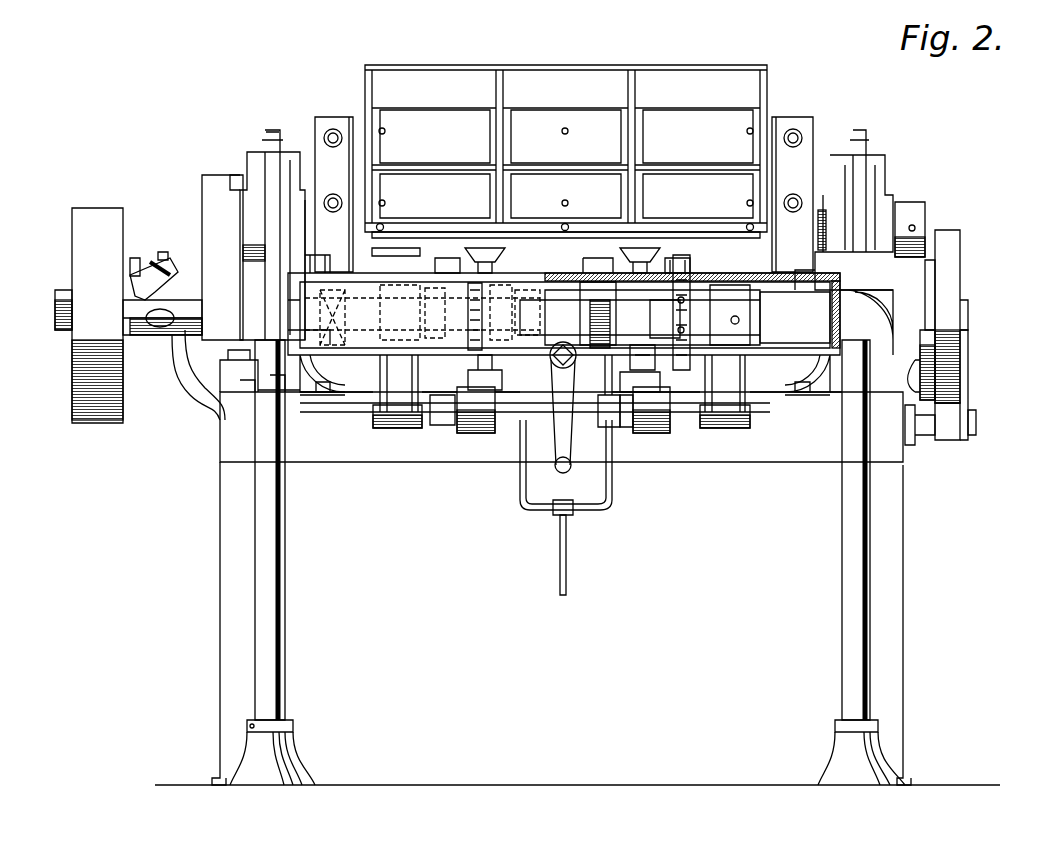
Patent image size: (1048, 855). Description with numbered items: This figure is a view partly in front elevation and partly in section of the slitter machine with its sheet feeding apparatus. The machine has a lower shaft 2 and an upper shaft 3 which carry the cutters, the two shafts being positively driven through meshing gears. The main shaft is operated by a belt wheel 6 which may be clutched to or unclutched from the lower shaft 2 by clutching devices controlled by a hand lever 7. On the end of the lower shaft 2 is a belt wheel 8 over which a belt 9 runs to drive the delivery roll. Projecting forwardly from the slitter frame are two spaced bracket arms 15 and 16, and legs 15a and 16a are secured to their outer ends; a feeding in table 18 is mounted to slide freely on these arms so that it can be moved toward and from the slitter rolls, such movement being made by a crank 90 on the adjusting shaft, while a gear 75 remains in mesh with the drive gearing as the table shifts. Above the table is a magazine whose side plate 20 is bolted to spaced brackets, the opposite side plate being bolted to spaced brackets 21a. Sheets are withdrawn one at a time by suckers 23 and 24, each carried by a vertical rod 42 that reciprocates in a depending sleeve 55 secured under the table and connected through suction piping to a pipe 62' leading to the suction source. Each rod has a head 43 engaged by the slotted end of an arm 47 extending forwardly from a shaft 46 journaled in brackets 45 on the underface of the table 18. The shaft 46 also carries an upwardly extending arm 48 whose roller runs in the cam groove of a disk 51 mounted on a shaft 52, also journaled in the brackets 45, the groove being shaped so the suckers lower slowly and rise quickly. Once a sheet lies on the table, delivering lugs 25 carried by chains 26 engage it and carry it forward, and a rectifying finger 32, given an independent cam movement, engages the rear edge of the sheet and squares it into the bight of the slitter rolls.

The lower shaft 2 is at (965, 321).
The upper shaft 3 is at (925, 222).
The belt wheel 6 is at (128, 315).
The hand lever 7 is at (158, 332).
The belt wheel 8 is at (965, 345).
The belt 9 is at (955, 445).
The bracket arm 15 is at (296, 333).
The leg 15a is at (285, 600).
The bracket arm 16 is at (890, 285).
The leg 16a is at (842, 606).
The feeding in table 18 is at (742, 290).
The side plate 20 is at (566, 151).
The bracket 21a is at (830, 116).
The sucker 23 is at (636, 250).
The sucker 24 is at (484, 250).
The delivering lug 25 is at (680, 258).
The chain 26 is at (692, 290).
The rectifying finger 32 is at (486, 430).
The vertical rod 42 is at (488, 368).
The head 43 is at (400, 407).
The bracket 45 is at (395, 368).
The shaft 46 is at (437, 424).
The arm 47 is at (455, 415).
The upwardly extending arm 48 is at (582, 425).
The disk 51 is at (580, 263).
The shaft 52 is at (636, 387).
The depending sleeve 55 is at (650, 410).
The pipe 62' is at (592, 555).
The gear 75 is at (968, 386).
The crank 90 is at (527, 430).